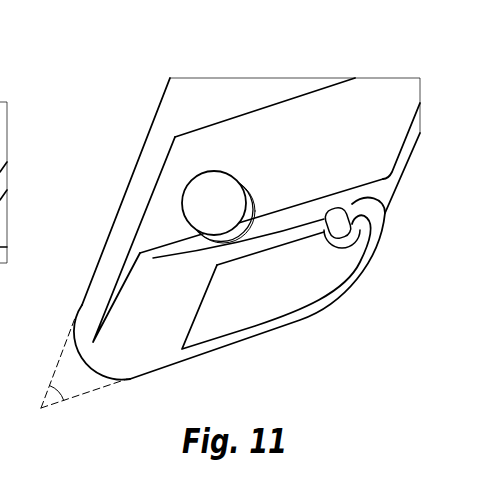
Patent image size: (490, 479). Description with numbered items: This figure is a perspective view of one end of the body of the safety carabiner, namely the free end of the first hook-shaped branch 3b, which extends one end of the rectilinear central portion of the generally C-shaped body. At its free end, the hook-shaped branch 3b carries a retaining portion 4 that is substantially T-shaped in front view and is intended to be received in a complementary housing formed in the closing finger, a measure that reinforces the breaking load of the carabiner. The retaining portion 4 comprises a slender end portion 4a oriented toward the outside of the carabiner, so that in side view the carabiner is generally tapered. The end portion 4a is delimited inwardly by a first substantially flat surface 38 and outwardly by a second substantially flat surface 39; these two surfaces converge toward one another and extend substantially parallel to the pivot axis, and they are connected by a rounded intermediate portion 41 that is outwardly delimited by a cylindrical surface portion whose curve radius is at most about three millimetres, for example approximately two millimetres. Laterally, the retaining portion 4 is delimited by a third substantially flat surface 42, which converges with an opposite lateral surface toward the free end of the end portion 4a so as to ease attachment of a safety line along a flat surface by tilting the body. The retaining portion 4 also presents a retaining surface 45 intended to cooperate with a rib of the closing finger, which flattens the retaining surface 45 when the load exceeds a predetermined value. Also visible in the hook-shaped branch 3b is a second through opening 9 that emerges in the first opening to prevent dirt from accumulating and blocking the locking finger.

The first hook-shaped branch 3b is at (225, 98).
The retaining portion 4 is at (188, 150).
The second substantially flat surface 39 is at (134, 170).
The second through opening 9 is at (202, 214).
The retaining surface 45 is at (351, 205).
The rounded intermediate portion 41 is at (80, 355).
The third substantially flat surface 42 is at (150, 317).
The slender end portion 4a is at (255, 295).
The first substantially flat surface 38 is at (294, 323).